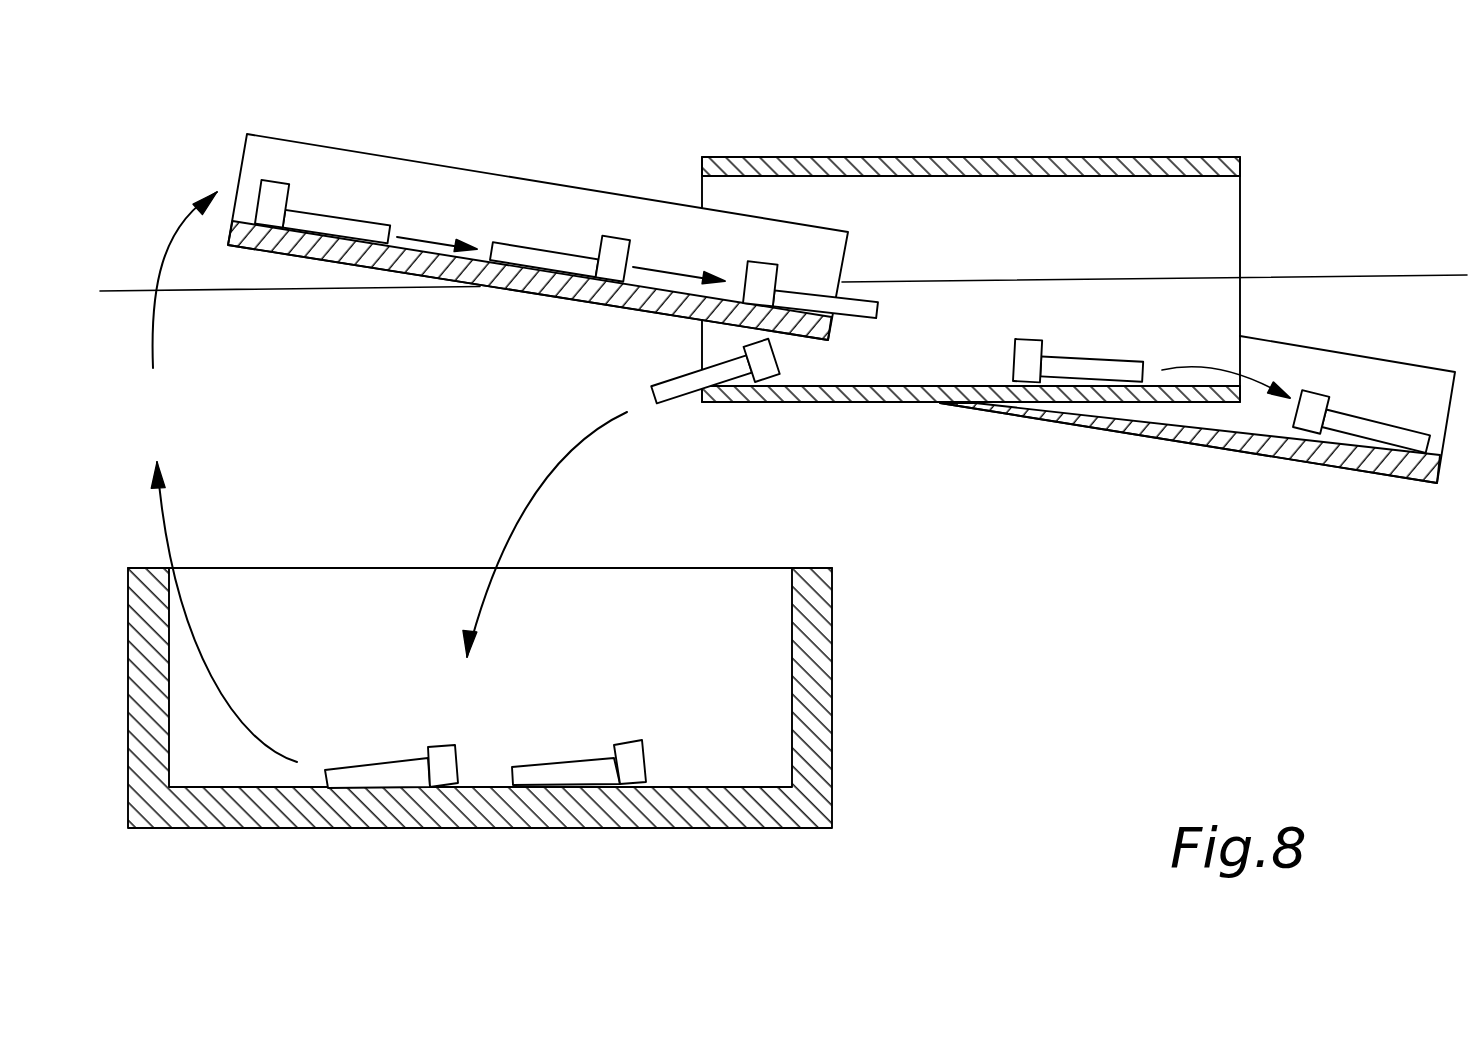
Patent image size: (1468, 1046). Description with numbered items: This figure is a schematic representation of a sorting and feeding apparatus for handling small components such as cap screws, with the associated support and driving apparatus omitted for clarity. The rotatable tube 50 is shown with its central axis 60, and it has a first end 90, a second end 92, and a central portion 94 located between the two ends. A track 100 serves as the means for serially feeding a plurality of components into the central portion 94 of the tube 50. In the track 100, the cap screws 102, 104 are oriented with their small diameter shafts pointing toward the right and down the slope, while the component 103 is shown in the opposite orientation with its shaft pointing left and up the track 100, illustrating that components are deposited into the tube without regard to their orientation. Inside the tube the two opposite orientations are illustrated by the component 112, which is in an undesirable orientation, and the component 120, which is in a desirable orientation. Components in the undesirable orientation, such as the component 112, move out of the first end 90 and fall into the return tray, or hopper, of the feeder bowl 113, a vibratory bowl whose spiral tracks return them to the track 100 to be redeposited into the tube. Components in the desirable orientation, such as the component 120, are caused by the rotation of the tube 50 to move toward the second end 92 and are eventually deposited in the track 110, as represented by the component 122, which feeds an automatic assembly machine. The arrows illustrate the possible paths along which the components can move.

The rotatable tube 50 is at (1012, 158).
The central axis 60 is at (352, 290).
The first end 90 is at (710, 195).
The second end 92 is at (1212, 213).
The central portion 94 is at (915, 210).
The track 100 is at (477, 267).
The cap screw 102 is at (332, 223).
The component 103 is at (617, 250).
The cap screw 104 is at (790, 292).
The track 110 is at (1145, 430).
The component 112 is at (673, 393).
The feeder bowl 113 is at (823, 675).
The component 120 is at (1020, 362).
The component 122 is at (1365, 428).